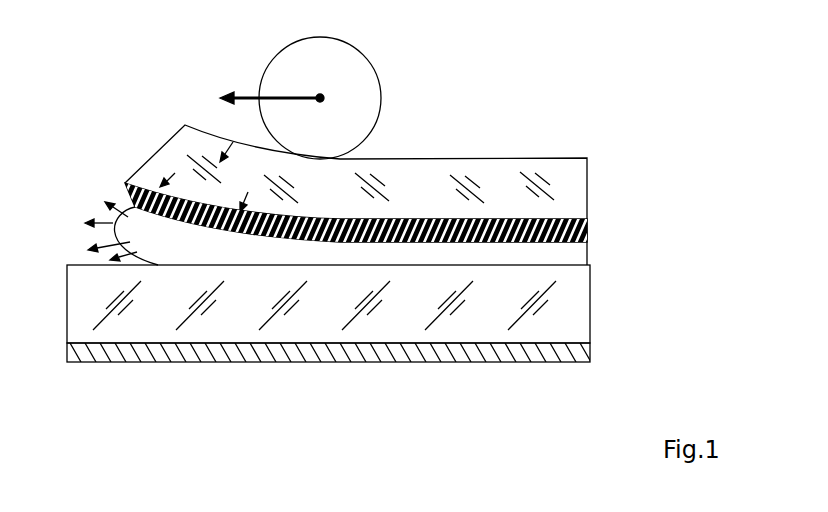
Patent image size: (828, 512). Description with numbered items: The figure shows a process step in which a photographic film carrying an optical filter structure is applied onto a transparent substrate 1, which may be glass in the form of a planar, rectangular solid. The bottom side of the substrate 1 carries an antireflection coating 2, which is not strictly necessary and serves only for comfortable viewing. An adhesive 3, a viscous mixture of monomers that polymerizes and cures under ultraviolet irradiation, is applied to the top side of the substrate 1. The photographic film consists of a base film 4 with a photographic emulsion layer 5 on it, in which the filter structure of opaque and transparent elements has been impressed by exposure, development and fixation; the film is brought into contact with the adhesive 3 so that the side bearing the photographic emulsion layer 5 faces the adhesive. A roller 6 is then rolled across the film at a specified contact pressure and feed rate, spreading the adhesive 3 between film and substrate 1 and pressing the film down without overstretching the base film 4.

The substrate 1 is at (582, 295).
The antireflection coating 2 is at (585, 351).
The adhesive 3 is at (583, 250).
The base film 4 is at (537, 167).
The photographic emulsion layer 5 is at (587, 221).
The roller 6 is at (370, 110).